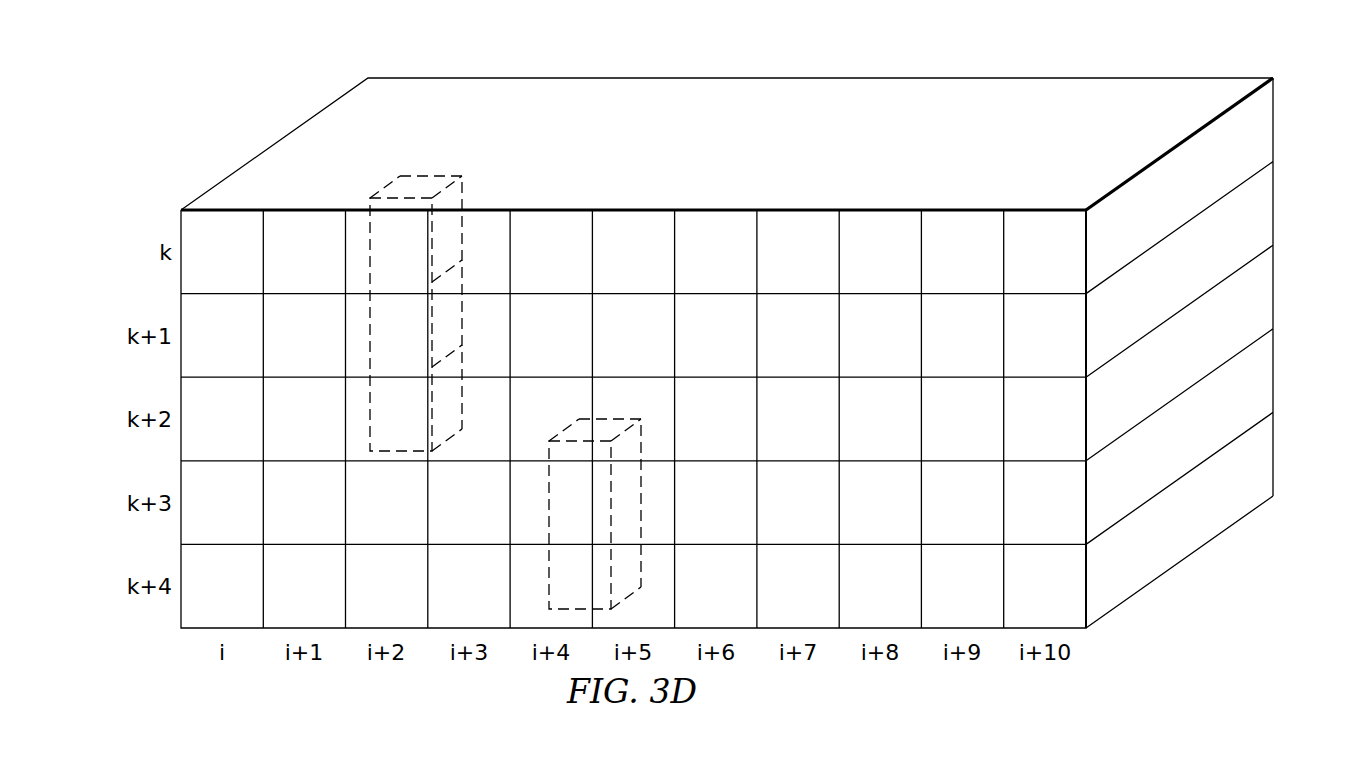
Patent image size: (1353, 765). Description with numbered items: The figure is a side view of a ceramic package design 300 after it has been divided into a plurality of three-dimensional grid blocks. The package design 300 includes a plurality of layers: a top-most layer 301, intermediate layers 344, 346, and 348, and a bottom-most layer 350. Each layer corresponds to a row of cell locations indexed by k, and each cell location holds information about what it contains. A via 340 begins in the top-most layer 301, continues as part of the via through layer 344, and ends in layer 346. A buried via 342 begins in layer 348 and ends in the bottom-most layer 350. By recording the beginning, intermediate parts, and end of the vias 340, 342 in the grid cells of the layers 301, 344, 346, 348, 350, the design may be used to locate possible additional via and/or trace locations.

The ceramic package design 300 is at (764, 355).
The layer 301 is at (1273, 117).
The via 340 is at (440, 178).
The buried via 342 is at (549, 565).
The layer 344 is at (1273, 198).
The layer 346 is at (1273, 290).
The layer 348 is at (1273, 371).
The layer 350 is at (1273, 454).